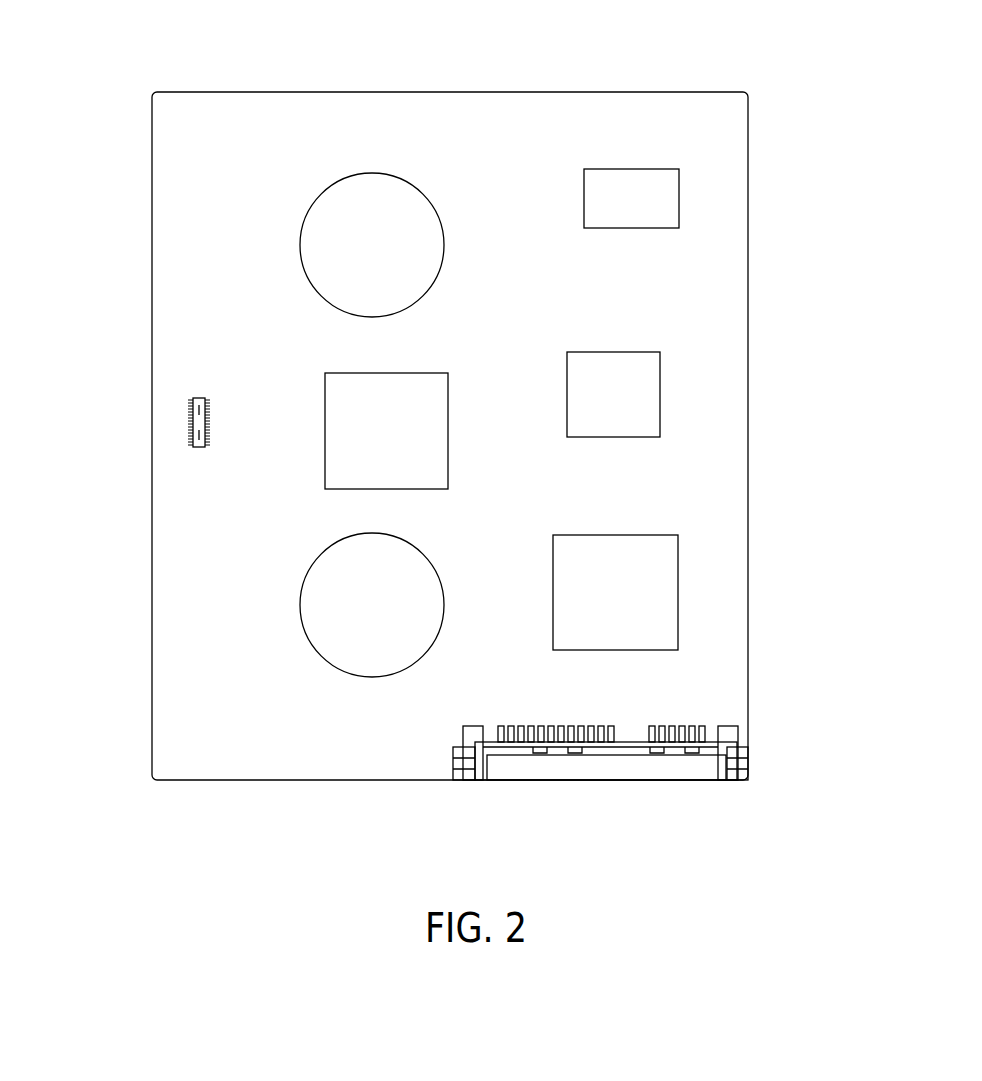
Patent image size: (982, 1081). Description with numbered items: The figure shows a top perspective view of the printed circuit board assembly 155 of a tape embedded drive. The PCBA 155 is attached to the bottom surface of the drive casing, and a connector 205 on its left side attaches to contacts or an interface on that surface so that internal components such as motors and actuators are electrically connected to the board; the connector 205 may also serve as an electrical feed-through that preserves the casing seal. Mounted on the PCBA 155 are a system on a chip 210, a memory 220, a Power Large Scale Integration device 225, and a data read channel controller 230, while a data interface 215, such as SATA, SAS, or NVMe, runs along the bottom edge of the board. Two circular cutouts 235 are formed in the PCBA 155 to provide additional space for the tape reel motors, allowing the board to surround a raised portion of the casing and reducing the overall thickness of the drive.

The printed circuit board assembly 155 is at (714, 116).
The connector 205 is at (188, 411).
The system on a chip 210 is at (653, 593).
The data interface 215 is at (615, 783).
The memory 220 is at (659, 193).
The Power Large Scale Integration 225 is at (645, 381).
The data read channel controller 230 is at (323, 387).
The cutout 235 is at (325, 236).